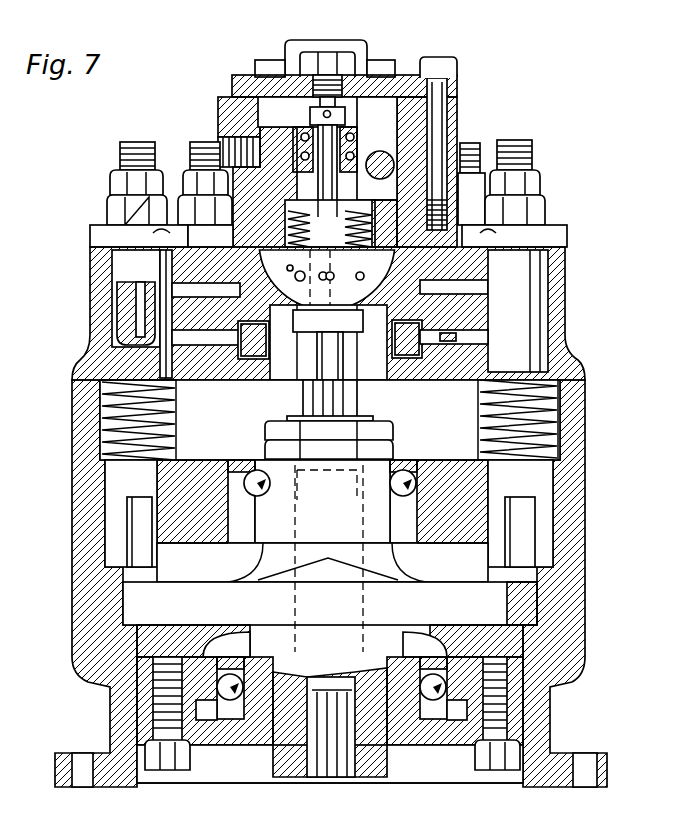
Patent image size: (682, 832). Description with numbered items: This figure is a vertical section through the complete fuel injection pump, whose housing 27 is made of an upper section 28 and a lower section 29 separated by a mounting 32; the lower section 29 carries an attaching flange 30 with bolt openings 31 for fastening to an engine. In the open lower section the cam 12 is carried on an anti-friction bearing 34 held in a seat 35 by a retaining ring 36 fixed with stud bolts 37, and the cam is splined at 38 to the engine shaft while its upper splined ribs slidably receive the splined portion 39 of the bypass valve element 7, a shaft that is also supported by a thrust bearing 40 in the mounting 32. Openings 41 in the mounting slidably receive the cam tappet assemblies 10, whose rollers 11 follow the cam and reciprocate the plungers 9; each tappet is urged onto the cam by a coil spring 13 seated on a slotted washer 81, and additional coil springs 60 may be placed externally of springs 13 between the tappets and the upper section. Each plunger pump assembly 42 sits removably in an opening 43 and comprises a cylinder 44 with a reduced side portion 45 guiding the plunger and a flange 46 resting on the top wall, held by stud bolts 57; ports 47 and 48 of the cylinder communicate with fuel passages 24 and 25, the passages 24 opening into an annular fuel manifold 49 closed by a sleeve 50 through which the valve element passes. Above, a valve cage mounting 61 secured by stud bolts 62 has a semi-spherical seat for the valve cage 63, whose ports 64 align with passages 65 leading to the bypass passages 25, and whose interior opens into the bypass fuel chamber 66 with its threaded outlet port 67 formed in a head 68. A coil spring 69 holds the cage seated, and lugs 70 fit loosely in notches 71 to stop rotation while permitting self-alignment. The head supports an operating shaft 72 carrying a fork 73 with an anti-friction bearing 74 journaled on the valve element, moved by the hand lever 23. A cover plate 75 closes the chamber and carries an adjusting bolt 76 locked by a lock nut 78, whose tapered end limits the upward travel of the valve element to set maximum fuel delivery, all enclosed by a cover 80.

The valve element 7 is at (328, 345).
The plunger 9 is at (123, 331).
The cam tappet assembly 10 is at (329, 513).
The roller 11 is at (331, 532).
The cam 12 is at (330, 603).
The coil spring 13 is at (176, 407).
The hand lever 23 is at (322, 562).
The fuel passage 24 is at (472, 336).
The bypass fuel passage 25 is at (480, 287).
The housing 27 is at (588, 574).
The upper section 28 is at (572, 391).
The lower section 29 is at (566, 644).
The attaching flange 30 is at (566, 755).
The bolt openings 31 is at (584, 781).
The mounting 32 is at (566, 494).
The anti-friction bearing 34 is at (222, 660).
The seat 35 is at (422, 647).
The retaining ring 36 is at (455, 734).
The stud bolts 37 is at (492, 762).
The splining 38 is at (333, 778).
The splined portion 39 is at (302, 396).
The thrust bearing 40 is at (411, 460).
The openings 41 is at (472, 463).
The plunger pump assembly 42 is at (535, 272).
The openings 43 is at (566, 292).
The cylinder 44 is at (512, 307).
The reduced side portion 45 is at (176, 398).
The flange 46 is at (562, 232).
The port 47 is at (142, 287).
The port 48 is at (160, 354).
The annular fuel manifold 49 is at (407, 339).
The collar or sleeve 50 is at (282, 347).
The stud bolts 57 is at (152, 233).
The coil springs 60 is at (176, 430).
The valve cage mounting 61 is at (333, 278).
The stud bolts 62 is at (420, 123).
The valve cage 63 is at (301, 285).
The ports 64 is at (328, 320).
The passages 65 is at (372, 289).
The bypass fuel chamber 66 is at (352, 133).
The outlet port 67 is at (222, 125).
The head 68 is at (447, 117).
The coil spring 69 is at (352, 210).
The lugs 70 is at (378, 247).
The notches 71 is at (240, 236).
The operating shaft 72 is at (380, 151).
The fork 73 is at (351, 142).
The anti-friction bearing 74 is at (313, 123).
The cover plate 75 is at (268, 72).
The adjusting bolt 76 is at (352, 41).
The lock nut 78 is at (300, 42).
The cover 80 is at (318, 78).
The slotted washers 81 is at (92, 363).